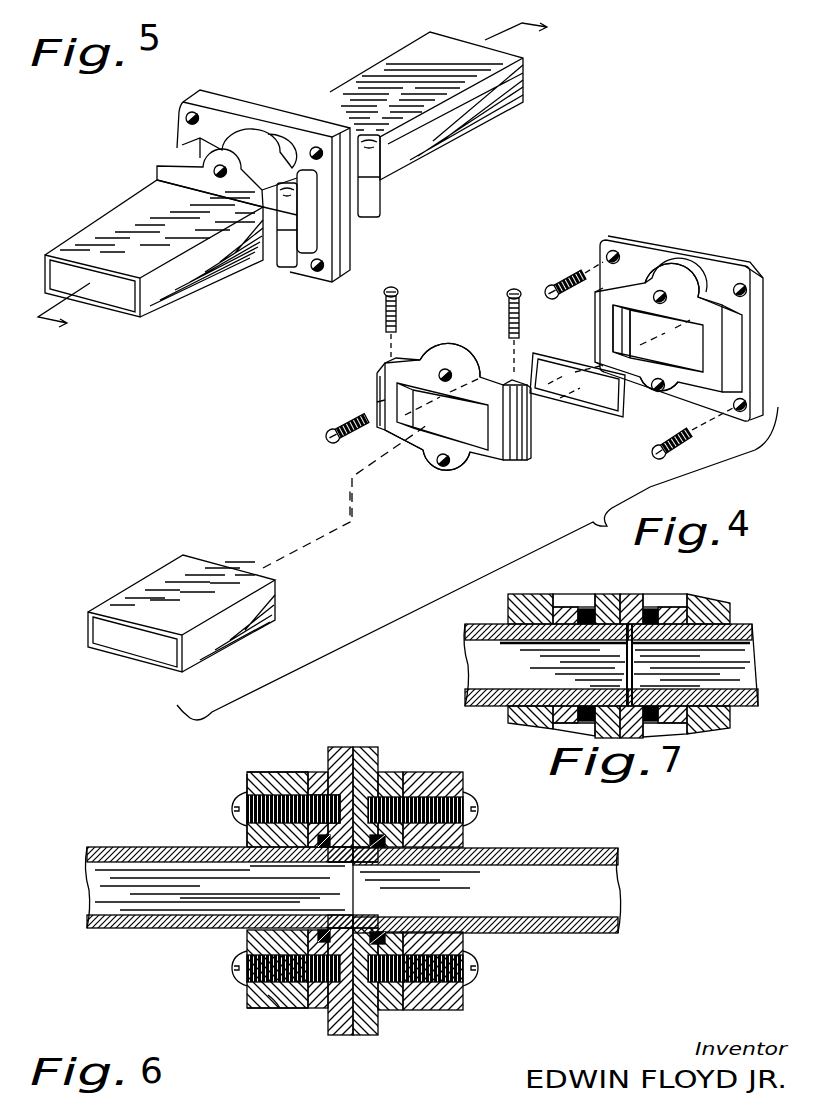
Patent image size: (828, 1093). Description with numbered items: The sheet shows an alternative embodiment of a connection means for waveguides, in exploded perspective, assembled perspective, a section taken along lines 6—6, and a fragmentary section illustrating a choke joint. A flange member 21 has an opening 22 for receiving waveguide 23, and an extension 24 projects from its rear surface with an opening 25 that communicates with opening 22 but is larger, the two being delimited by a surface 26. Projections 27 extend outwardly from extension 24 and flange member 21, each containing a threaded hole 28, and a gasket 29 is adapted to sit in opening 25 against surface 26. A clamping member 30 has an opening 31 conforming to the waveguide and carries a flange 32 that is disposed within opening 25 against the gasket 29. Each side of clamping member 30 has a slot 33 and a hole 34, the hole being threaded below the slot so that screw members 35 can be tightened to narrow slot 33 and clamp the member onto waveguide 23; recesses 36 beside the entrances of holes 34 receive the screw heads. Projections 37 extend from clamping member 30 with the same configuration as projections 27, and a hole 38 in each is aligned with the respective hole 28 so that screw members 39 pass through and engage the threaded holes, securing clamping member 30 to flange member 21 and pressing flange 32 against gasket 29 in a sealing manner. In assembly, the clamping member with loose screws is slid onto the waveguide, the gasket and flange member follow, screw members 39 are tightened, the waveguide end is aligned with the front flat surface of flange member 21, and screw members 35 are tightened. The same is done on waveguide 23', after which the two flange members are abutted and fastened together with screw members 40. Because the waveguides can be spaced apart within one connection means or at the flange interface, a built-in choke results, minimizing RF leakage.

In FIG. 5, the flange member 21 is at (185, 132).
In FIG. 4, the flange member 21 is at (622, 242).
In FIG. 7, the flange member 21 is at (605, 596).
In FIG. 6, the flange member 21 is at (336, 748).
In FIG. 4, the opening 22 is at (633, 325).
In FIG. 6, the opening 22 is at (340, 855).
In FIG. 5, the waveguide 23 is at (154, 259).
In FIG. 4, the waveguide 23 is at (181, 598).
In FIG. 7, the waveguide 23 is at (527, 665).
In FIG. 6, the waveguide 23 is at (219, 866).
In FIG. 5, the waveguide 23' is at (439, 106).
In FIG. 7, the waveguide 23' is at (692, 689).
In FIG. 6, the waveguide 23' is at (487, 872).
In FIG. 4, the extension 24 is at (600, 300).
In FIG. 4, the opening 25 is at (611, 323).
In FIG. 4, the surface 26 is at (628, 340).
In FIG. 6, the surface 26 is at (330, 897).
In FIG. 5, the projection 27 is at (255, 138).
In FIG. 4, the projection 27 is at (678, 268).
In FIG. 6, the projection 27 is at (312, 772).
In FIG. 4, the threaded hole 28 is at (655, 290).
In FIG. 6, the threaded hole 28 is at (322, 798).
In FIG. 4, the gasket 29 is at (590, 410).
In FIG. 6, the gasket 29 is at (375, 847).
In FIG. 5, the clamping member 30 is at (157, 158).
In FIG. 4, the clamping member 30 is at (380, 375).
In FIG. 7, the clamping member 30 is at (545, 596).
In FIG. 6, the clamping member 30 is at (247, 838).
In FIG. 4, the opening 31 is at (400, 437).
In FIG. 6, the opening 31 is at (247, 930).
In FIG. 4, the flange 32 is at (440, 358).
In FIG. 6, the flange 32 is at (322, 847).
In FIG. 5, the slot 33 is at (270, 263).
In FIG. 4, the slot 33 is at (518, 452).
In FIG. 4, the hole 34 is at (528, 400).
In FIG. 4, the screw member 35 is at (396, 294).
In FIG. 4, the recess 36 is at (396, 358).
In FIG. 4, the projection 37 is at (470, 350).
In FIG. 6, the projection 37 is at (250, 772).
In FIG. 5, the hole 38 is at (220, 171).
In FIG. 4, the hole 38 is at (445, 382).
In FIG. 6, the hole 38 is at (272, 1000).
In FIG. 4, the screw member 39 is at (326, 432).
In FIG. 6, the screw member 39 is at (238, 800).
In FIG. 5, the screw member 40 is at (186, 117).
In FIG. 4, the screw member 40 is at (558, 284).
In FIG. 5, the section line 6— 6 is at (299, 181).